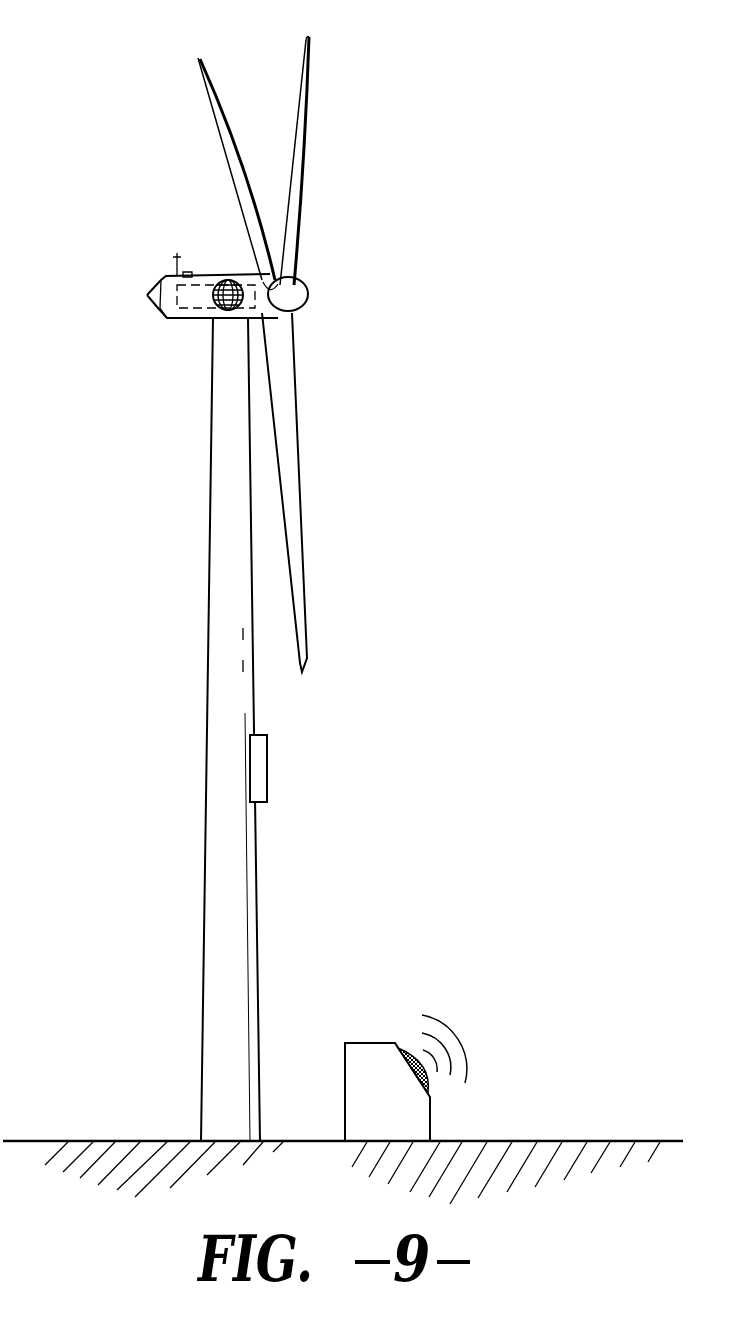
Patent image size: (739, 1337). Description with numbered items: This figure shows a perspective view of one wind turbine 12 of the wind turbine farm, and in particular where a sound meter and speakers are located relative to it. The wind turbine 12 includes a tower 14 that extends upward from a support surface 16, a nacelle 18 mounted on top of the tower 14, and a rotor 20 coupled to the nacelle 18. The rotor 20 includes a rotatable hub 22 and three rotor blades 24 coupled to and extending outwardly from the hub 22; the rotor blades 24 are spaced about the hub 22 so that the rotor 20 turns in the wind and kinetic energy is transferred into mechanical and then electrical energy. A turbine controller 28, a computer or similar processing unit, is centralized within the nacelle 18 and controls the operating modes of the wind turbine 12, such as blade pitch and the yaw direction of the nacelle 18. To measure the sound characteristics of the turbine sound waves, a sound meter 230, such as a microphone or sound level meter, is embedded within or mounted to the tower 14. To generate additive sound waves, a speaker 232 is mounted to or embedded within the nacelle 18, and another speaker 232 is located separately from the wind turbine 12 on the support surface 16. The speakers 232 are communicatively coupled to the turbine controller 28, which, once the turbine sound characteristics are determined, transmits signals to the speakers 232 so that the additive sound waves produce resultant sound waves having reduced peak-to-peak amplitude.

The wind turbine 12 is at (410, 110).
The tower 14 is at (218, 842).
The support surface 16 is at (132, 1141).
The nacelle 18 is at (188, 320).
The rotor 20 is at (312, 268).
The rotatable hub 22 is at (308, 297).
The rotor blade 24 is at (300, 80).
The turbine controller 28 is at (208, 282).
The sound meter 230 is at (268, 760).
The speaker 232 is at (230, 312).